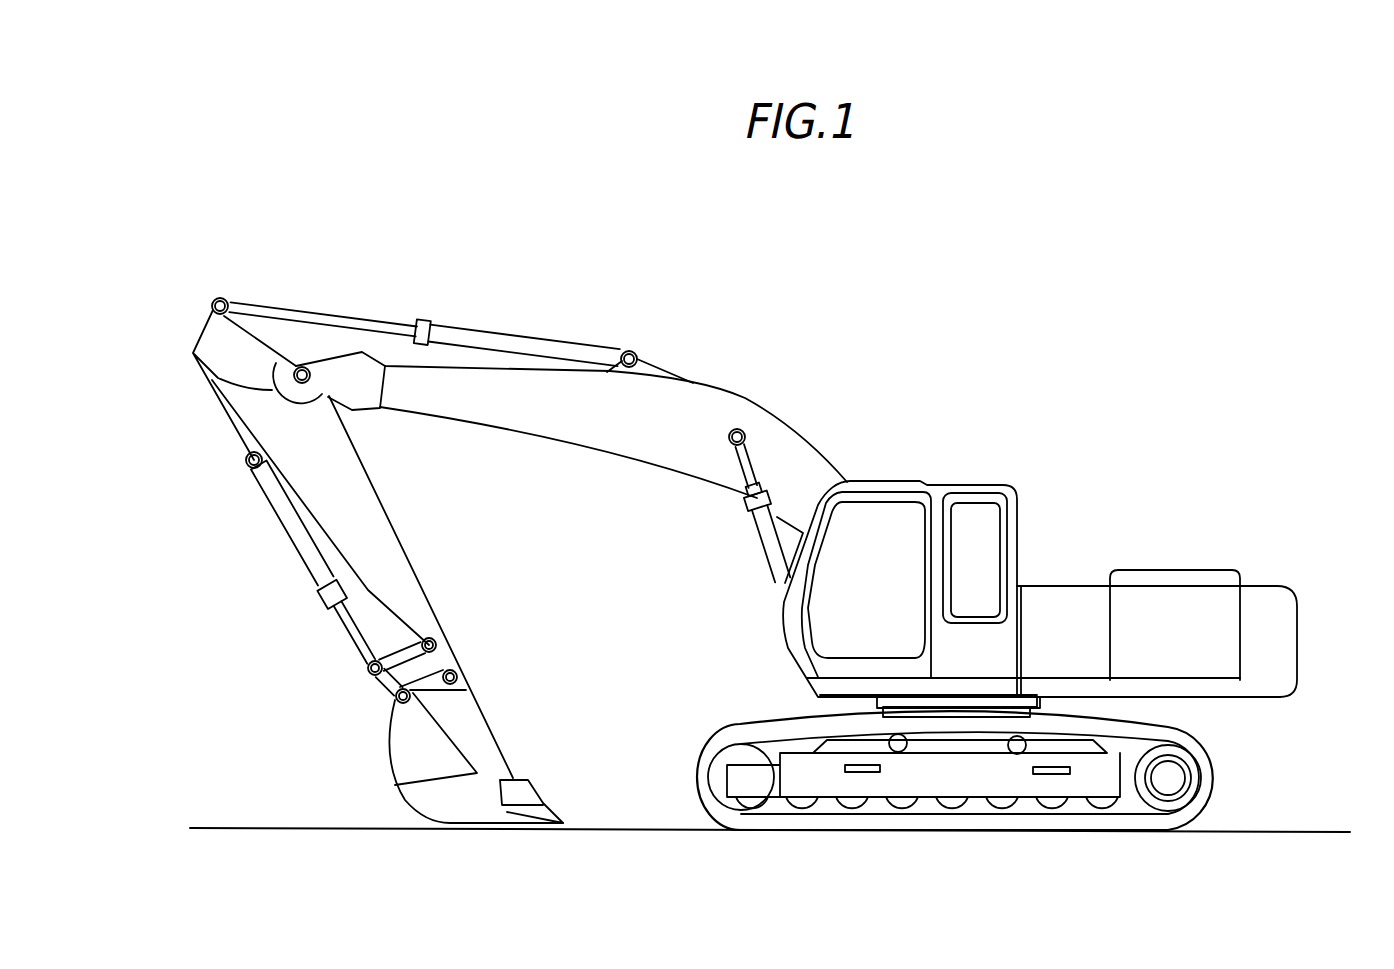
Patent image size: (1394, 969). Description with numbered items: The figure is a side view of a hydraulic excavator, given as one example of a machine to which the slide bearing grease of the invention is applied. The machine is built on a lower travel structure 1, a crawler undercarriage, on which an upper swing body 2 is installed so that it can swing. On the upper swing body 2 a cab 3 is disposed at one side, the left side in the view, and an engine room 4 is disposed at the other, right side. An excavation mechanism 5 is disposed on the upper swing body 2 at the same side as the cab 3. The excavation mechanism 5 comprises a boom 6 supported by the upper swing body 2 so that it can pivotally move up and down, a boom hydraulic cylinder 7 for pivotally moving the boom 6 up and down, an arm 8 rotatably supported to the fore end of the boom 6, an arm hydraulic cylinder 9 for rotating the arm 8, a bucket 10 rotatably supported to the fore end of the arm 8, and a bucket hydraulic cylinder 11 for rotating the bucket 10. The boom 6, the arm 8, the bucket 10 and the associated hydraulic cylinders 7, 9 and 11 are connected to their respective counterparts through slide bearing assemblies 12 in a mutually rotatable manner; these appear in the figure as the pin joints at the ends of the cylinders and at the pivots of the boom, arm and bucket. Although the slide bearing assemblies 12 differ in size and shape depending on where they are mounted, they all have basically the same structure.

The lower travel structure 1 is at (1261, 784).
The upper swing body 2 is at (1329, 652).
The cab 3 is at (959, 482).
The engine room 4 is at (1178, 570).
The excavation mechanism 5 is at (553, 281).
The boom 6 is at (714, 392).
The boom hydraulic cylinder 7 is at (764, 547).
The arm 8 is at (378, 537).
The arm hydraulic cylinder 9 is at (500, 337).
The bucket 10 is at (390, 766).
The bucket hydraulic cylinder 11 is at (296, 551).
The slide bearing assembly 12 is at (221, 297).